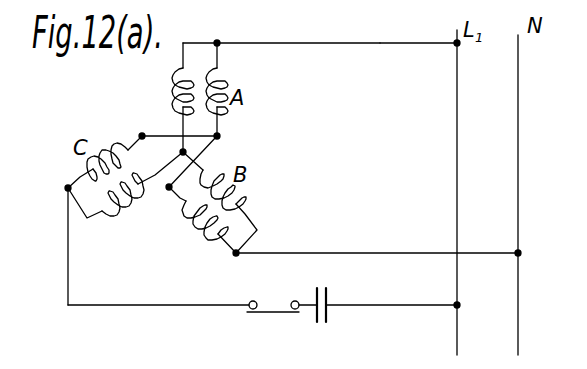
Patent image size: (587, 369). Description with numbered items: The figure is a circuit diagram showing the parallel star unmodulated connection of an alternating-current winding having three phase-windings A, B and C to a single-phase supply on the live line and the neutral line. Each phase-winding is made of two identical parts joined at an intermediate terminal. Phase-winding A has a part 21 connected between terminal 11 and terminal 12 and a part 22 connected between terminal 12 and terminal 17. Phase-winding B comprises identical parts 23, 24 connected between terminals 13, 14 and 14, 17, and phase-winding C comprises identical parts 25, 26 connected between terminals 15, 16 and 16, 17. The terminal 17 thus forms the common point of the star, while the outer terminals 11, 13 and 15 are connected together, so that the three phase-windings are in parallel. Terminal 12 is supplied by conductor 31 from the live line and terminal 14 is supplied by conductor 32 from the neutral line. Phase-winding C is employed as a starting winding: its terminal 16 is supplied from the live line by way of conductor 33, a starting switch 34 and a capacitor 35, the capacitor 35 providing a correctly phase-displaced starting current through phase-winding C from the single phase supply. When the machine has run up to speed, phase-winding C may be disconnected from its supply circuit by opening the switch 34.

The terminal 11 is at (220, 137).
The terminal 12 is at (219, 42).
The terminal 13 is at (173, 201).
The terminal 14 is at (235, 255).
The terminal 15 is at (142, 136).
The terminal 16 is at (66, 189).
The terminal 17 is at (168, 188).
The phase-winding part 21 is at (228, 110).
The phase-winding part 22 is at (183, 54).
The phase-winding part 23 is at (199, 223).
The phase-winding part 24 is at (242, 198).
The phase-winding part 25 is at (90, 165).
The phase-winding part 26 is at (110, 217).
The conductor 31 is at (380, 43).
The conductor 32 is at (358, 249).
The conductor 33 is at (155, 305).
The starting switch 34 is at (269, 317).
The capacitor 35 is at (330, 318).